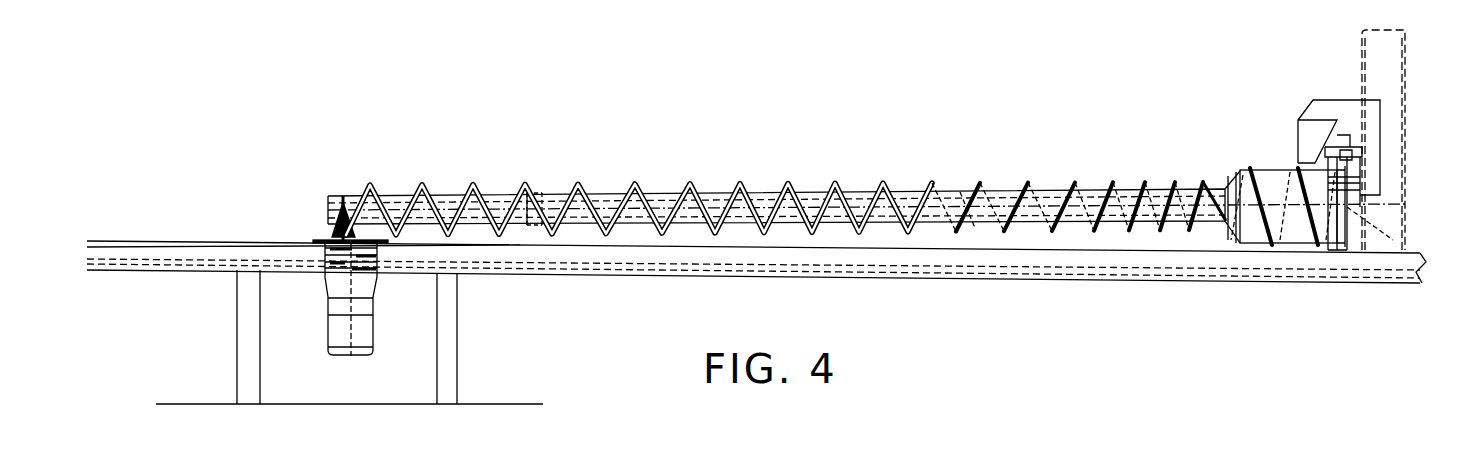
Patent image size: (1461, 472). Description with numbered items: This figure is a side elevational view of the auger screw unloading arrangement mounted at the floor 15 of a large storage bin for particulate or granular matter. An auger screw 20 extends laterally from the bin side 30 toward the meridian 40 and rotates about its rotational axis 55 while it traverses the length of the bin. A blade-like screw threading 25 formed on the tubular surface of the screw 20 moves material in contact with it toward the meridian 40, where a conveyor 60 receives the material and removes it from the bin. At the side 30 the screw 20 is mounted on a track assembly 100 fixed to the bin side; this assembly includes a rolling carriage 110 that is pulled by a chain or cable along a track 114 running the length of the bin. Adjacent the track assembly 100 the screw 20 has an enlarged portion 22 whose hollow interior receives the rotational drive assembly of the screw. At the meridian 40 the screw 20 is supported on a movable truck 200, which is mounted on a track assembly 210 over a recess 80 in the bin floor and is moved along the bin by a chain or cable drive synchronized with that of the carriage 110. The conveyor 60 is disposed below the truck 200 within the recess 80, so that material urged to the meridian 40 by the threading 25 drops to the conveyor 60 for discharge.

The floor 15 is at (1140, 262).
The auger screw 20 is at (860, 152).
The enlarged portion 22 is at (1273, 170).
The screw threading 25 is at (834, 188).
The side 30 is at (1413, 161).
The meridian 40 is at (352, 356).
The rotational axis 55 is at (960, 192).
The conveyor 60 is at (381, 298).
The recess 80 is at (423, 340).
The track assembly 100 is at (1354, 136).
The rolling carriage 110 is at (1353, 153).
The track 114 is at (1370, 185).
The movable truck 200 is at (324, 229).
The track assembly 210 is at (390, 252).